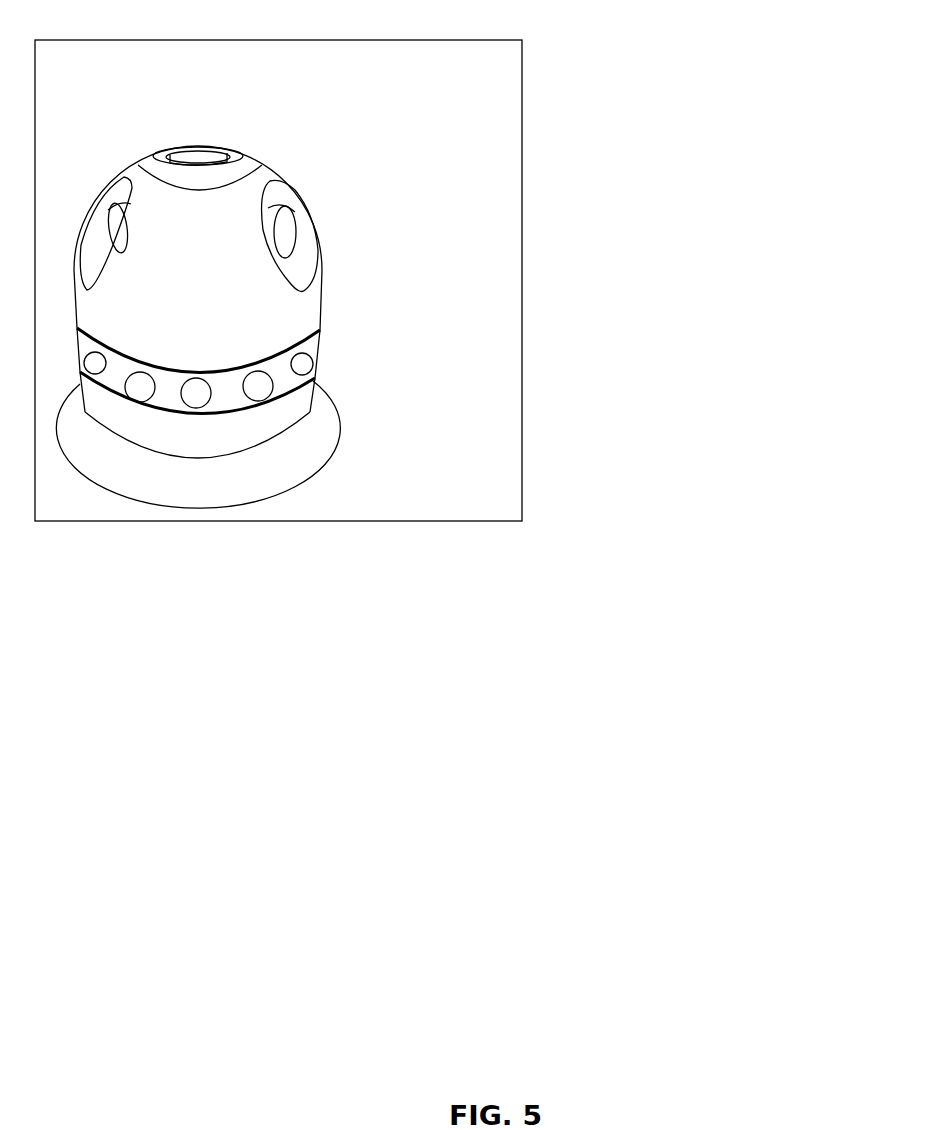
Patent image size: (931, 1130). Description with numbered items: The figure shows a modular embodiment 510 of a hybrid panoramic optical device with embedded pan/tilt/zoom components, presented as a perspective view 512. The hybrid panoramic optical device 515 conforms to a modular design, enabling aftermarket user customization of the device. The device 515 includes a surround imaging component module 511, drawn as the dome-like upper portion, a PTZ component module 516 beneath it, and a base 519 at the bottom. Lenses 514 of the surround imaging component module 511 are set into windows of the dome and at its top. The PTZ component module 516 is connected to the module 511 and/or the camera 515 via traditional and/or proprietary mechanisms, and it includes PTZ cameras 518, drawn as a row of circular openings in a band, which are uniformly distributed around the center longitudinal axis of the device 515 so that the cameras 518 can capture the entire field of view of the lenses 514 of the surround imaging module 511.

The embodiment 510 is at (288, 21).
The surround imaging component module 511 is at (247, 188).
The perspective view 512 is at (248, 67).
The lenses 514 is at (193, 153).
The hybrid panoramic optical device 515 is at (144, 299).
The PTZ component module 516 is at (313, 350).
The PTZ cameras 518 is at (140, 402).
The base 519 is at (312, 452).